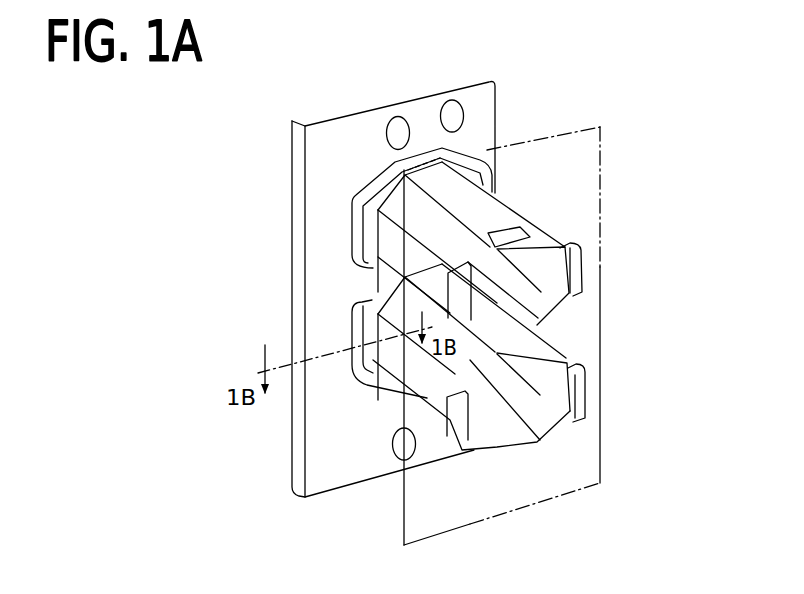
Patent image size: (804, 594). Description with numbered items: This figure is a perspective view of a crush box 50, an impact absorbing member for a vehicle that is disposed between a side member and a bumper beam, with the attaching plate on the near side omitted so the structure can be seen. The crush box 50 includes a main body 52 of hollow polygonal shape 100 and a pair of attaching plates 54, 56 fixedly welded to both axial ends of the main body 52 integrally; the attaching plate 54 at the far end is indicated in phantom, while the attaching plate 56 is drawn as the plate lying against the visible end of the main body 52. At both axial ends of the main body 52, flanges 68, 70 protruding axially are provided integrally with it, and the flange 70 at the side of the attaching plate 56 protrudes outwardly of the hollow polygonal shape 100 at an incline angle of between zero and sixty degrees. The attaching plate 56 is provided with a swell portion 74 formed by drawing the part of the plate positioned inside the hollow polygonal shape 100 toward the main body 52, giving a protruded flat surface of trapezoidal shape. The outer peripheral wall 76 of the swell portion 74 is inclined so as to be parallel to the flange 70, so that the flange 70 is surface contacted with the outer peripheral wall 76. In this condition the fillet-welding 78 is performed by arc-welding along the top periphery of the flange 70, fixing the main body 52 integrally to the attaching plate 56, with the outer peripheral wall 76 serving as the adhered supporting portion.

The crush box 50 is at (550, 100).
The main body 52 is at (552, 465).
The attaching plate 54 is at (587, 192).
The attaching plate 56 is at (353, 130).
The flange 68 is at (583, 278).
The flange 70 is at (368, 180).
The swell portion 74 is at (388, 290).
The outer peripheral wall 76 is at (357, 264).
The fillet-welding 78 is at (352, 225).
The hollow polygonal shape 100 is at (577, 340).